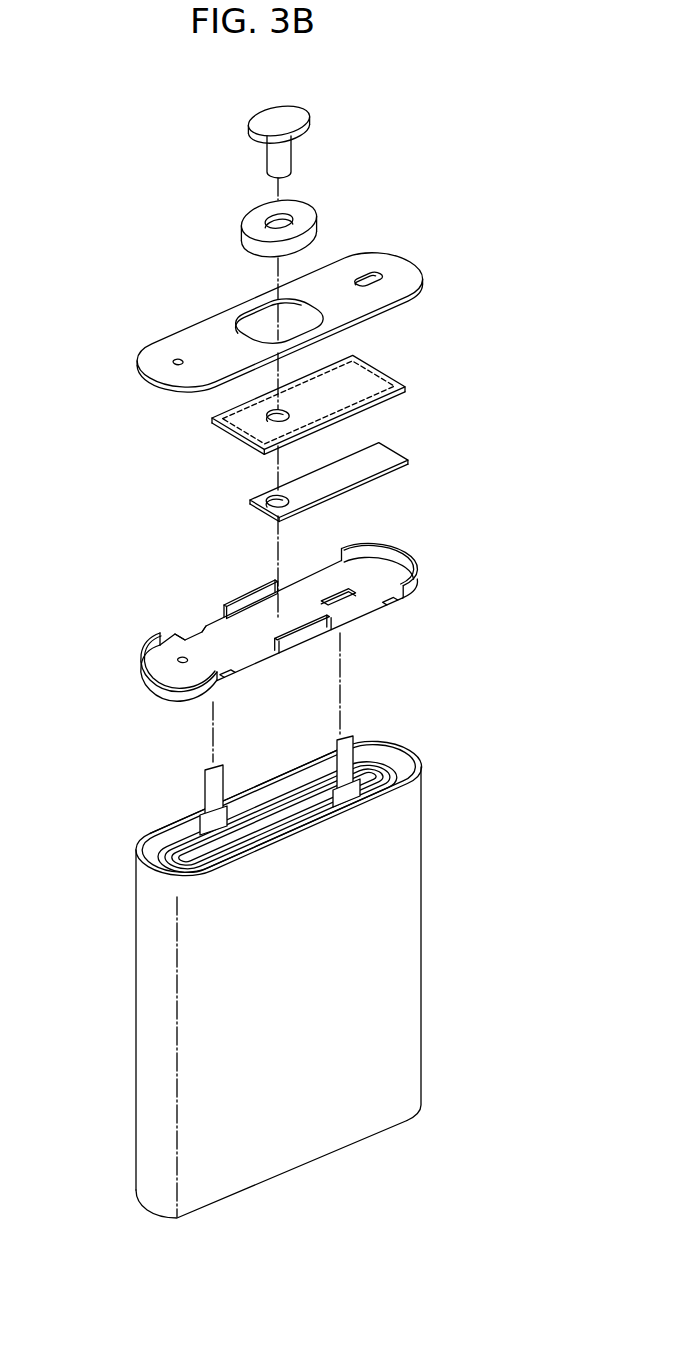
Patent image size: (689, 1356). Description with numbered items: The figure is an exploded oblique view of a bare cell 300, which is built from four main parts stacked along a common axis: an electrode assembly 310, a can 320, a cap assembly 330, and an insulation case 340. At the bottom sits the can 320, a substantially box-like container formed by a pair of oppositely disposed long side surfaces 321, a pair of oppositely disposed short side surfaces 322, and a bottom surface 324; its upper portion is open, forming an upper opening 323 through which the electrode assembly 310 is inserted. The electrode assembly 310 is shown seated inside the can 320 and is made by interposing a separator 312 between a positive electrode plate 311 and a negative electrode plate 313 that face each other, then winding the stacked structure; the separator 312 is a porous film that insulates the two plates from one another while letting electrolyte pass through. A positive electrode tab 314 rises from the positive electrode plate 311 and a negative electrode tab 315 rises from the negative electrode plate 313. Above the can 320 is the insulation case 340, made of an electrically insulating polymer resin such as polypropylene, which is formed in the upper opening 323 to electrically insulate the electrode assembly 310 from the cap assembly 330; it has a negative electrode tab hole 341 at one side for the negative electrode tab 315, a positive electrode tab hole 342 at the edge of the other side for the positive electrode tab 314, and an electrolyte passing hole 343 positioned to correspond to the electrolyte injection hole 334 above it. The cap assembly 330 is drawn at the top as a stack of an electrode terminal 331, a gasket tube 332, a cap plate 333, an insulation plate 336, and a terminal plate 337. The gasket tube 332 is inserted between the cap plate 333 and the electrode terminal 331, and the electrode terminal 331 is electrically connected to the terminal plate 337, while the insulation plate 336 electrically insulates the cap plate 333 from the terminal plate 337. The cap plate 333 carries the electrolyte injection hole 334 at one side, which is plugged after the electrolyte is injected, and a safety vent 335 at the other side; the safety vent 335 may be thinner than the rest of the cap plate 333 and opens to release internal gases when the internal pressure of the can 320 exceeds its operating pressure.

The bare cell 300 is at (86, 101).
The electrode assembly 310 is at (305, 772).
The positive electrode plate 311 is at (397, 774).
The separator 312 is at (386, 774).
The negative electrode plate 313 is at (371, 773).
The positive electrode tab 314 is at (212, 788).
The negative electrode tab 315 is at (343, 762).
The can 320 is at (284, 991).
The long side surfaces 321 is at (330, 1140).
The short side surfaces 322 is at (148, 1035).
The upper opening 323 is at (155, 853).
The bottom surface 324 is at (265, 1187).
The cap assembly 330 is at (497, 137).
The electrode terminal 331 is at (300, 120).
The gasket tube 332 is at (257, 218).
The cap plate 333 is at (303, 305).
The electrolyte injection hole 334 is at (176, 360).
The safety vent 335 is at (368, 275).
The insulation plate 336 is at (396, 372).
The terminal plate 337 is at (392, 444).
The insulation case 340 is at (245, 632).
The negative electrode tab hole 341 is at (333, 592).
The positive electrode tab hole 342 is at (193, 630).
The electrolyte passing hole 343 is at (177, 664).